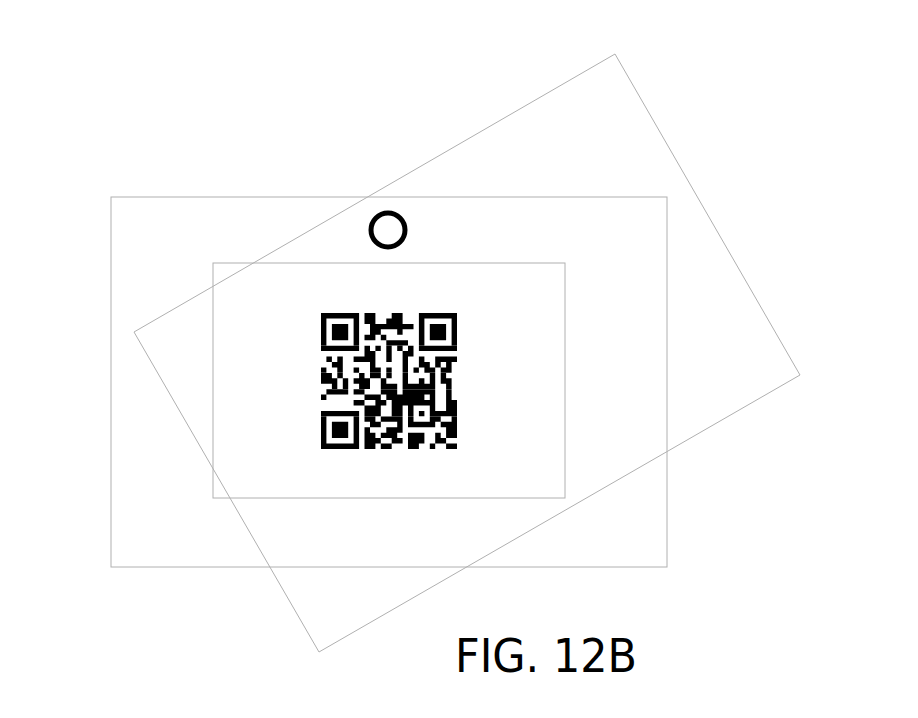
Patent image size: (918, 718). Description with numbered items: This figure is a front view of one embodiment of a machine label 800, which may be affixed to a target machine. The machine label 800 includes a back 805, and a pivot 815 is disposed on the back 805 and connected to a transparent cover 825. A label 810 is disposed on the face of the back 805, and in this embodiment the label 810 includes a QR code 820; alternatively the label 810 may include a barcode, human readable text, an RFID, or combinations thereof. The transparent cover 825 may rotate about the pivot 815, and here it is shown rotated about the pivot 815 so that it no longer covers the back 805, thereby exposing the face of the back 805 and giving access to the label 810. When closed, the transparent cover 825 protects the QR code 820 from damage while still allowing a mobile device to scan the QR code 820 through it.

The machine label 800 is at (87, 146).
The back 805 is at (107, 212).
The label 810 is at (213, 381).
The pivot 815 is at (386, 211).
The QR code 820 is at (322, 432).
The transparent cover 825 is at (701, 198).